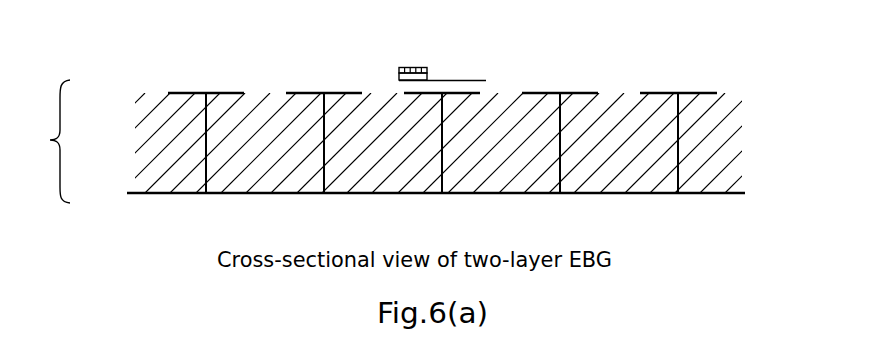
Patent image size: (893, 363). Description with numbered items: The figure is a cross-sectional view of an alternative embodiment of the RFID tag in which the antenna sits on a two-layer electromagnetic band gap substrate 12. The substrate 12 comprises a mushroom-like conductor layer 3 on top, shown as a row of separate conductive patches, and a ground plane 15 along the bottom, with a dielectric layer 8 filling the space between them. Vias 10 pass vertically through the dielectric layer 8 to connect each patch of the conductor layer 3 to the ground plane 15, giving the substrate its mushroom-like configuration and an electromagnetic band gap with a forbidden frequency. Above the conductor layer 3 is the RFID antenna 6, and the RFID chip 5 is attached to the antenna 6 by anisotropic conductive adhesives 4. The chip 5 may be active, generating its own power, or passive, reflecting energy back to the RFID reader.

The mushroom-like conductor layer 3 is at (193, 93).
The anisotropic conductive adhesives 4 is at (398, 72).
The RFID chip 5 is at (414, 68).
The RFID antenna 6 is at (463, 80).
The dielectric layer 8 is at (723, 145).
The vias 10 is at (206, 170).
The electromagnetic band gap substrate 12 is at (45, 141).
The ground plane 15 is at (640, 193).